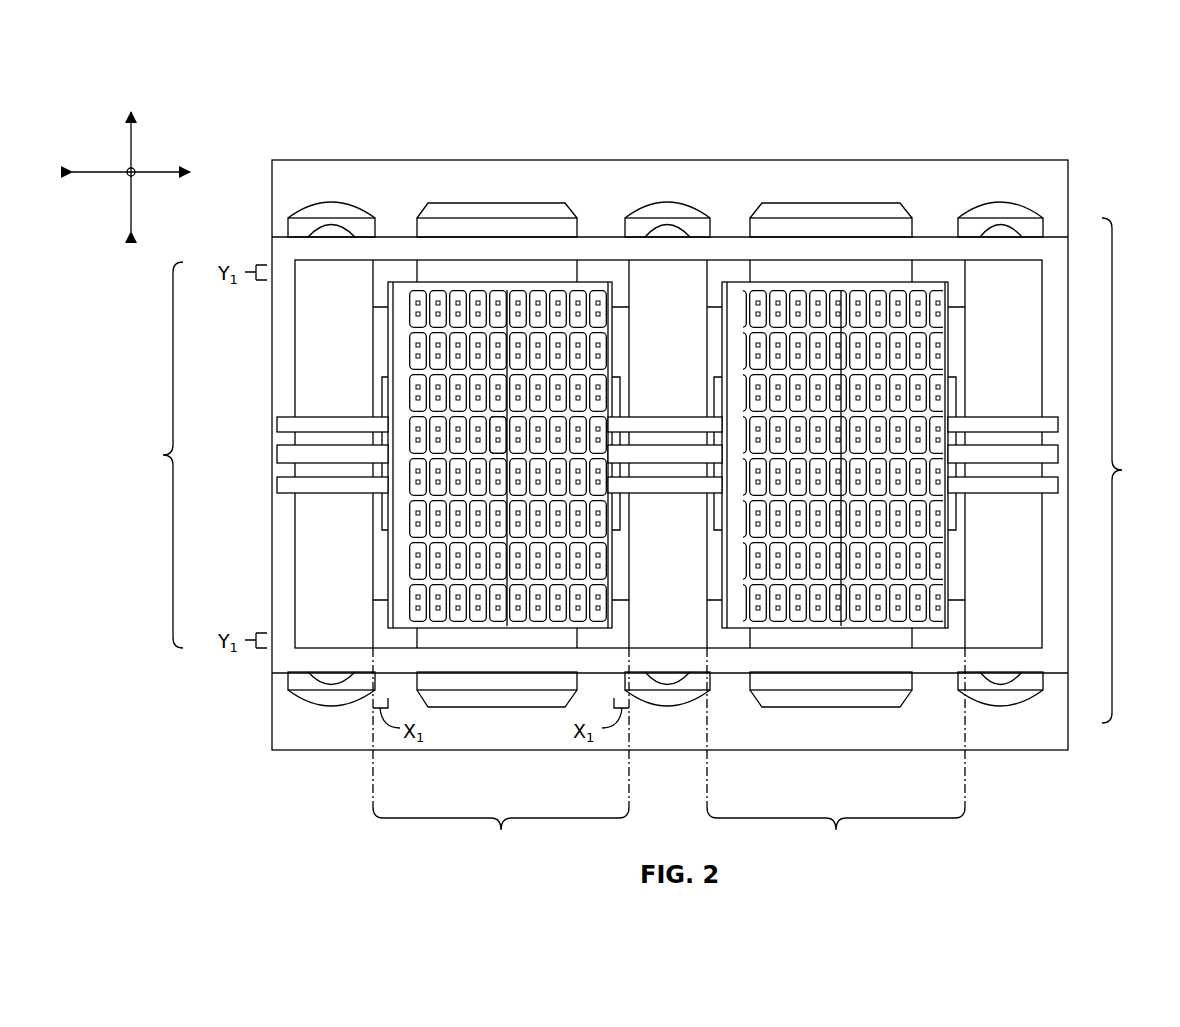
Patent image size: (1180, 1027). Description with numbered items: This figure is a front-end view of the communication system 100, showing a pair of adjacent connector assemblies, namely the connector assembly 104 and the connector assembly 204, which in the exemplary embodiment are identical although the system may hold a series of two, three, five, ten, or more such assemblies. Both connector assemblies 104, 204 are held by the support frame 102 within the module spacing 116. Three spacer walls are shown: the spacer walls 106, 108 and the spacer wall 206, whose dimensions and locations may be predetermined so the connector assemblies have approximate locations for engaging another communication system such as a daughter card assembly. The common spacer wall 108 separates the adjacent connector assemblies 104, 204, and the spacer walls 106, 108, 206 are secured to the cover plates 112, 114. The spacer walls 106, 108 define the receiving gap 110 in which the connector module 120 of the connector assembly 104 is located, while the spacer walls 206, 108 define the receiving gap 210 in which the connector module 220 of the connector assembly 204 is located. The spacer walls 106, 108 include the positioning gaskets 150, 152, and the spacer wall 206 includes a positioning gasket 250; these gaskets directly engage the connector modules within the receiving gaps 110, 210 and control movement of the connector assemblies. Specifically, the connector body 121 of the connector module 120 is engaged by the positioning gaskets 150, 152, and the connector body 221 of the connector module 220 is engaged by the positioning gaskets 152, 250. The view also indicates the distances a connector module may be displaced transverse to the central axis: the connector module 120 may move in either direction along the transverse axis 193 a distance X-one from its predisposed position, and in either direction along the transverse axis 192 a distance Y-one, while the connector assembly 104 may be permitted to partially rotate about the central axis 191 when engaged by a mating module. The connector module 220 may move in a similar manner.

The communication system 100 is at (1056, 113).
The support frame 102 is at (731, 470).
The connector assembly 104 is at (583, 194).
The spacer wall 106 is at (328, 642).
The spacer wall 108 is at (659, 634).
The receiving gap 110 is at (501, 571).
The cover plate 112 is at (1057, 243).
The cover plate 114 is at (1055, 665).
The module spacing 116 is at (543, 454).
The connector module 120 is at (409, 279).
The connector body 121 is at (590, 280).
The positioning gasket 150 is at (313, 436).
The positioning gasket 152 is at (668, 437).
The central axis 191 is at (503, 453).
The transverse axis 192 is at (131, 143).
The transverse axis 193 is at (165, 170).
The connector assembly 204 is at (940, 191).
The spacer wall 206 is at (1008, 634).
The receiving gap 210 is at (836, 571).
The connector module 220 is at (745, 278).
The connector body 221 is at (923, 280).
The positioning gasket 250 is at (1018, 440).